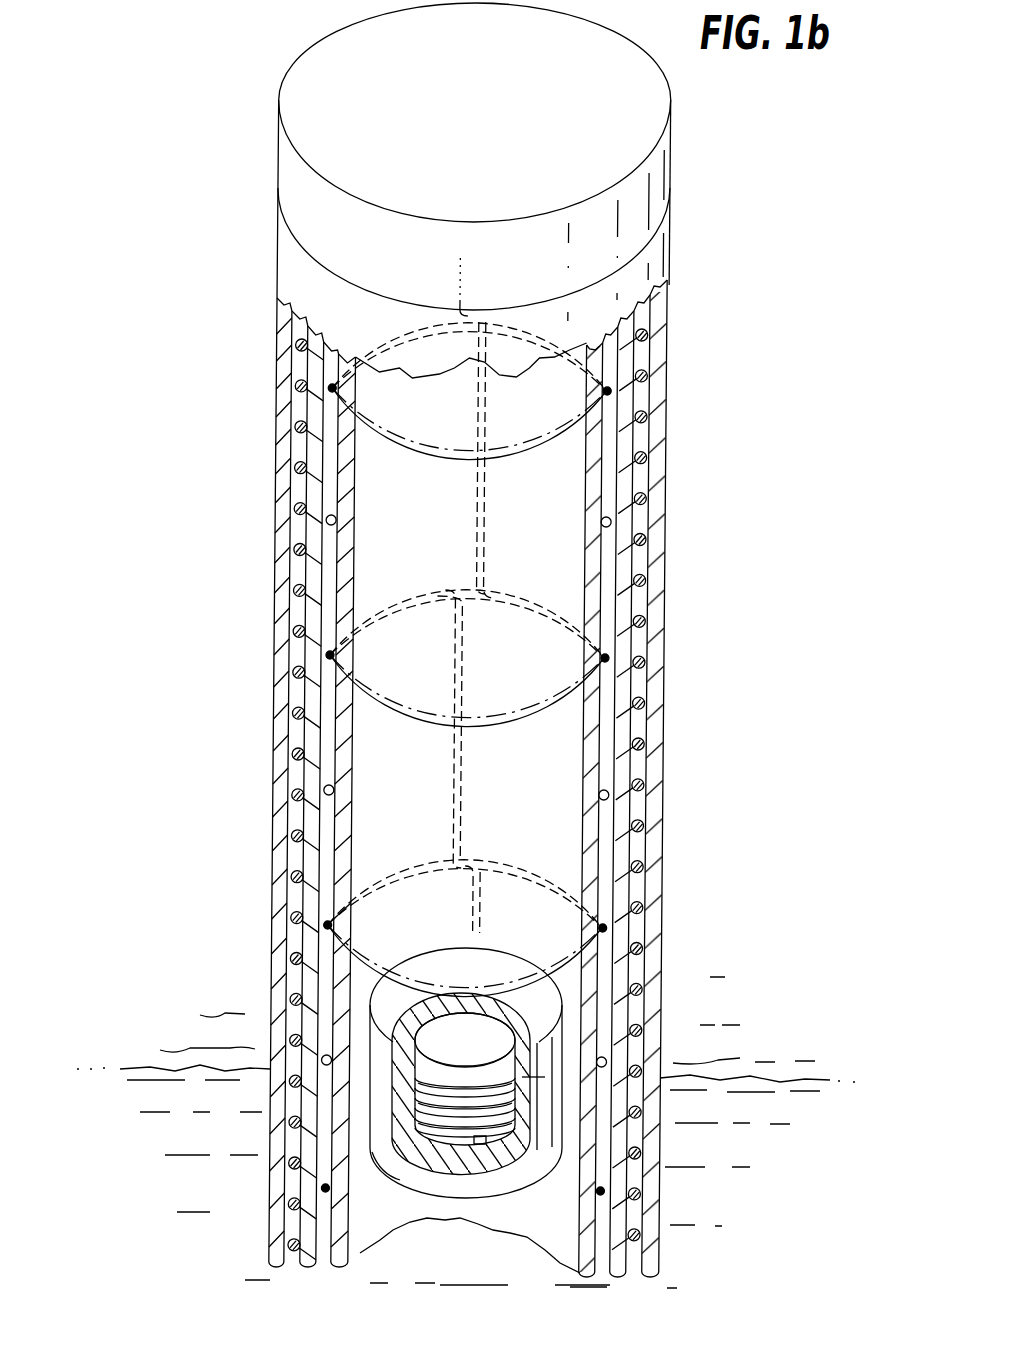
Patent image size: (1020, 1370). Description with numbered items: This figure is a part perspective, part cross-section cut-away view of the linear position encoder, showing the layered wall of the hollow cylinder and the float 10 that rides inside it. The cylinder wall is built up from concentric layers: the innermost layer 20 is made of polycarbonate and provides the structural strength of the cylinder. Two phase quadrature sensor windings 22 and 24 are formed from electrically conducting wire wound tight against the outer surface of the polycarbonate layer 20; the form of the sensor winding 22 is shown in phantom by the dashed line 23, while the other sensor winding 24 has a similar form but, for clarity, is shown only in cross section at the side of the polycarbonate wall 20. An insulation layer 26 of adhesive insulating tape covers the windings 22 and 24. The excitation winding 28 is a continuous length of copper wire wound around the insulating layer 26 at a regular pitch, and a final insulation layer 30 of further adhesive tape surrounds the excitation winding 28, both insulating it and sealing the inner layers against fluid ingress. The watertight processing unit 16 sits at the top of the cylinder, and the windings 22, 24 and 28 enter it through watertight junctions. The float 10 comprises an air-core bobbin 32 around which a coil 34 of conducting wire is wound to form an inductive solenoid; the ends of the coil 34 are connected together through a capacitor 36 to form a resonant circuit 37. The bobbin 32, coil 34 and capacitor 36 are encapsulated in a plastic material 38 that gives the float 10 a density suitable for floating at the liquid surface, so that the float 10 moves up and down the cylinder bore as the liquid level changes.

The float 10 is at (443, 948).
The processing unit 16 is at (636, 202).
The innermost layer 20 is at (597, 487).
The sensor winding 22 is at (604, 391).
The dashed line 23 is at (519, 452).
The sensor winding 24 is at (608, 523).
The insulation layer 26 is at (625, 433).
The excitation winding 28 is at (670, 331).
The insulation layer 30 is at (660, 362).
The air-core bobbin 32 is at (483, 1030).
The coil 34 is at (485, 1143).
The capacitor 36 is at (485, 1146).
The resonant circuit 37 is at (516, 1080).
The plastic material 38 is at (410, 1157).